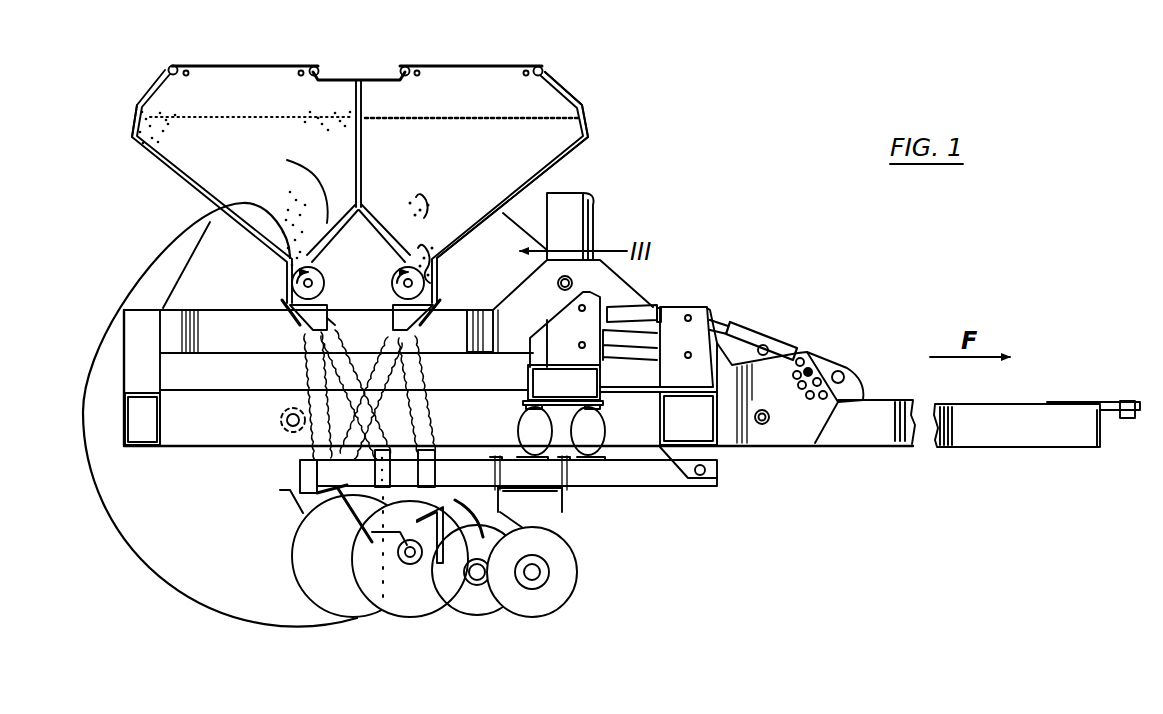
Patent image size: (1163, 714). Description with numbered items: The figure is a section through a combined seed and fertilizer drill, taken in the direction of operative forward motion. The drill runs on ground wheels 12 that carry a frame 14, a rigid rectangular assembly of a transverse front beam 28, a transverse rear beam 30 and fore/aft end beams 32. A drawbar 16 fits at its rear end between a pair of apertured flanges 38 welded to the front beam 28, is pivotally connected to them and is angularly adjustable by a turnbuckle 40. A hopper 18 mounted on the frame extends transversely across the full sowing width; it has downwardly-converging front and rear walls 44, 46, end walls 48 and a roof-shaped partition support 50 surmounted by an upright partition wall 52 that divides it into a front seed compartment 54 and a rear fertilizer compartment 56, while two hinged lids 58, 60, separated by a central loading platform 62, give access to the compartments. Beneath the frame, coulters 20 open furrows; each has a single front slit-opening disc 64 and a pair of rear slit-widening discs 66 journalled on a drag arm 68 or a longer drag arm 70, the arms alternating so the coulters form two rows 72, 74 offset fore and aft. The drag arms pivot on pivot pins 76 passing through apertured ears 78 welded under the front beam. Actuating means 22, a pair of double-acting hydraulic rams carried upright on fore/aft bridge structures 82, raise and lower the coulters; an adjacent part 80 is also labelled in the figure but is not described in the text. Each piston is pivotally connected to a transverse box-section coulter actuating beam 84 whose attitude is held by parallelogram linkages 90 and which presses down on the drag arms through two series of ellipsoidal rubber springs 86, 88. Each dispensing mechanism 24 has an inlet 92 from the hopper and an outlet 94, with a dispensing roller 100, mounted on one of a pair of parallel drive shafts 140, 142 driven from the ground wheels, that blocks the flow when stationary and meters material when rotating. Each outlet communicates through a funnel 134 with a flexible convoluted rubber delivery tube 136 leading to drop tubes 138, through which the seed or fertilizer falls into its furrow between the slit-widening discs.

The ground wheels 12 is at (103, 513).
The frame 14 is at (123, 453).
The drawbar 16 is at (870, 438).
The hopper 18 is at (359, 161).
The coulters 20 is at (560, 558).
The actuating means 22 is at (590, 192).
The agricultural dispensing mechanisms 24 is at (388, 208).
The front beam 28 is at (717, 425).
The rear beam 30 is at (125, 412).
The end beams 32 is at (200, 443).
The apertured flanges 38 is at (808, 435).
The turnbuckle 40 is at (753, 327).
The front wall 44 is at (527, 192).
The rear wall 46 is at (132, 148).
The end walls 48 is at (246, 77).
The partition support 50 is at (289, 206).
The partition wall 52 is at (380, 93).
The front seed compartment 54 is at (552, 93).
The rear fertilizer compartment 56 is at (280, 91).
The hinged lid 58 is at (433, 65).
The hinged lid 60 is at (210, 65).
The central loading platform 62 is at (362, 78).
The front slit-opening disc 64 is at (477, 615).
The rear slit-widening discs 66 is at (350, 550).
The drag arm 68 is at (607, 477).
The drag arm 70 is at (327, 477).
The coulter row 72 is at (393, 615).
The coulter row 74 is at (357, 623).
The pivot pins 76 is at (697, 477).
The apertured ears 78 is at (703, 452).
The duct flange 80 is at (573, 215).
The bridge structures 82 is at (124, 311).
The coulter actuating beam 84 is at (530, 365).
The ellipsoidal rubber springs 86 is at (593, 420).
The ellipsoidal rubber springs 88 is at (527, 380).
The parallelogram linkages 90 is at (653, 300).
The inlet 92 is at (207, 208).
The outlet 94 is at (290, 310).
The dispensing roller 100 is at (402, 270).
The funnel 134 is at (333, 315).
The flexible convoluted rubber delivery tube 136 is at (320, 372).
The drop tubes 138 is at (427, 467).
The drive shaft 140 is at (412, 283).
The drive shaft 142 is at (297, 283).